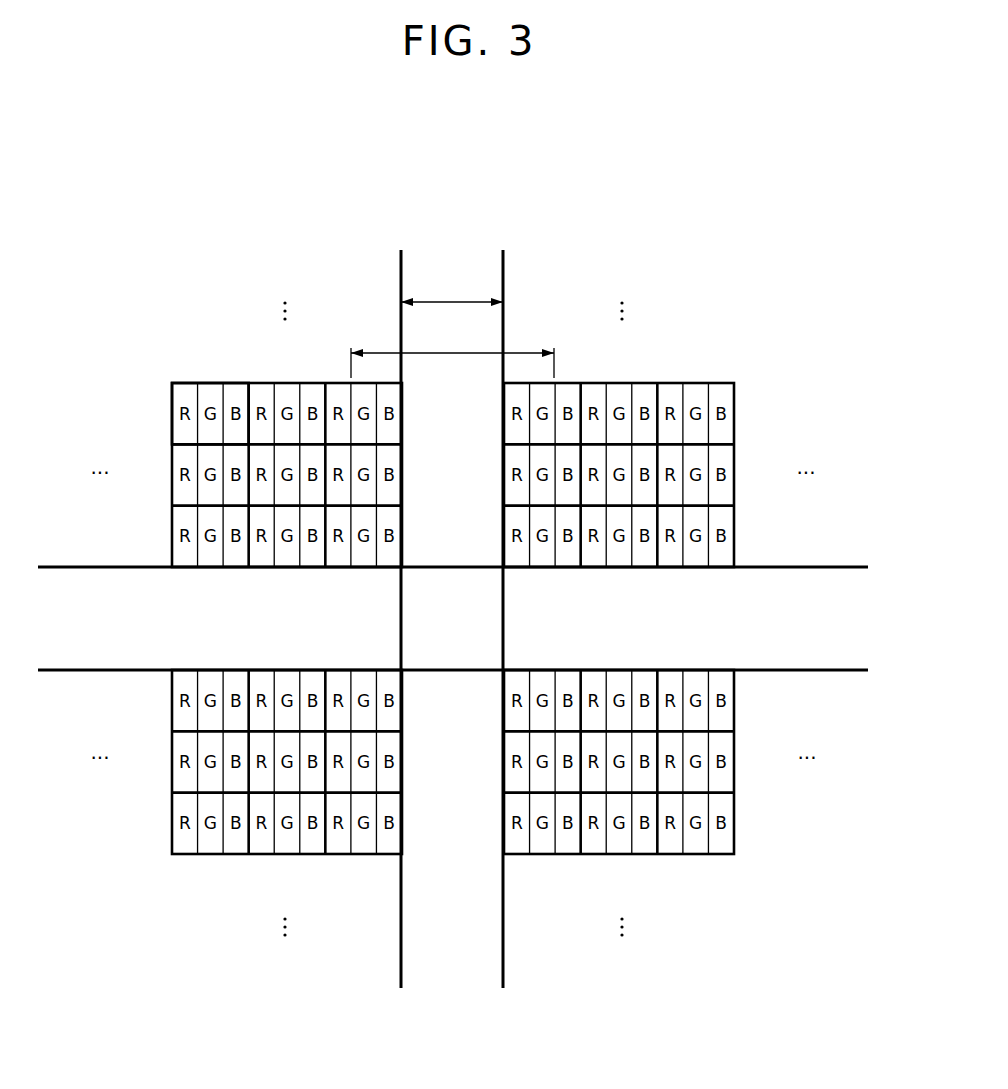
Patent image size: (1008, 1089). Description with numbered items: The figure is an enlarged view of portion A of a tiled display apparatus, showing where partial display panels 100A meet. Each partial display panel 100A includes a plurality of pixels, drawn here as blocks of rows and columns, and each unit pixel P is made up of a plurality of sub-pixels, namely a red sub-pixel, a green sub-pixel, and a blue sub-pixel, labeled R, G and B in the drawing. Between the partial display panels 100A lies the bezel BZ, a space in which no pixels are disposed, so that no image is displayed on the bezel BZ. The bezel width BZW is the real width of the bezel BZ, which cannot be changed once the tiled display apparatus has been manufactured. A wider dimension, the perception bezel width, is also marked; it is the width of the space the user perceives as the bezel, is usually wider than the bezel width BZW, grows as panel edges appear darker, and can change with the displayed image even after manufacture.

The portion A is at (583, 196).
The partial display panel 100A is at (100, 568).
The bezel BZ is at (449, 258).
The bezel width BZW is at (452, 290).
The unit pixel P is at (210, 383).